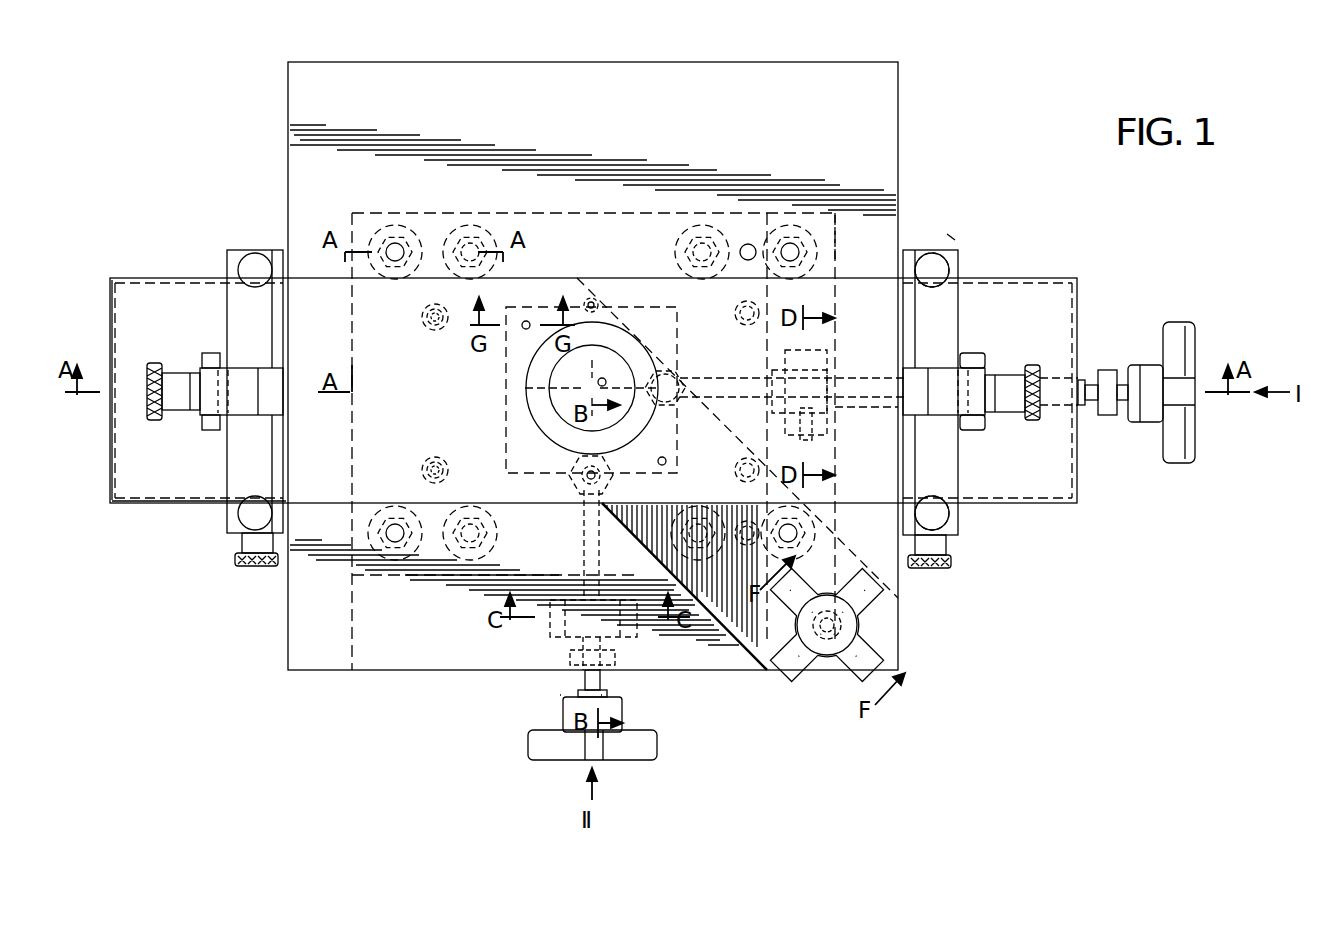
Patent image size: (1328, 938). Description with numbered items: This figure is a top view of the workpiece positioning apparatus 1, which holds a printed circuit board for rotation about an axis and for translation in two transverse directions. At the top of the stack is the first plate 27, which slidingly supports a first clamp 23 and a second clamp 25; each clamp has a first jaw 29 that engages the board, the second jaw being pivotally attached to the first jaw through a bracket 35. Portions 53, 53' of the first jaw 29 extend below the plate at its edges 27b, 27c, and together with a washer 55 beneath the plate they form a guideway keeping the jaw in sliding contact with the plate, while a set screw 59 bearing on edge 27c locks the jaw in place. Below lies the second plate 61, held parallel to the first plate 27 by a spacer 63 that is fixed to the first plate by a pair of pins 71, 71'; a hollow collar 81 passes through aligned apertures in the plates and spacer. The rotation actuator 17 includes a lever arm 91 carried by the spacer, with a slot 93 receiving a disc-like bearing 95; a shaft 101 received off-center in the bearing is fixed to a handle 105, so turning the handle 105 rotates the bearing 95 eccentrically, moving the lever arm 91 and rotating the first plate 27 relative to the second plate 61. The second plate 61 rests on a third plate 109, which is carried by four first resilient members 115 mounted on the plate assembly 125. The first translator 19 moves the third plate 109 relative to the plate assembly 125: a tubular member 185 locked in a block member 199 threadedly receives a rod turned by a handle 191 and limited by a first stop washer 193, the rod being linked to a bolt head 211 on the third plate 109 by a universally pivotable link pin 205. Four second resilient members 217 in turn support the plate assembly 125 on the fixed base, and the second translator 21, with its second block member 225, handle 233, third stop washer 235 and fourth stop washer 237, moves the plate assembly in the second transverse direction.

The workpiece positioning apparatus 1 is at (990, 128).
The rotation actuator 17 is at (920, 630).
The first translator 19 is at (1203, 322).
The second translator 21 is at (690, 745).
The first clamp 23 is at (215, 248).
The second clamp 25 is at (1002, 215).
The first plate 27 is at (1065, 278).
The edge of first plate 27b is at (125, 278).
The edge of first plate 27c is at (130, 503).
The first jaw 29 is at (932, 250).
The hub 35 is at (975, 355).
The portion of first jaw 53 is at (976, 263).
The portion of first jaw 53' is at (969, 515).
The washer 55 is at (950, 240).
The set screw 59 is at (962, 560).
The second plate 61 is at (745, 62).
The spacer 63 is at (600, 304).
The pin 71 is at (555, 277).
The pin 71' is at (684, 441).
The collar 81 is at (650, 332).
The lever arm 91 is at (735, 665).
The slot 93 is at (822, 672).
The disc-like bearing 95 is at (735, 650).
The shaft 101 is at (878, 648).
The handle 105 is at (878, 600).
The third plate 109 is at (770, 215).
The first resilient members 115 is at (475, 226).
The plate assembly 125 is at (840, 215).
The tubular member 185 is at (840, 386).
The handle 191 is at (1183, 465).
The first stop washer 193 is at (1107, 416).
The block member 199 is at (822, 368).
The link pin 205 is at (690, 390).
The bolt head 211 is at (665, 372).
The second resilient members 217 is at (393, 228).
The second block member 225 is at (640, 640).
The handle 233 is at (655, 762).
The third stop washer 235 is at (570, 658).
The fourth stop washer 237 is at (572, 595).